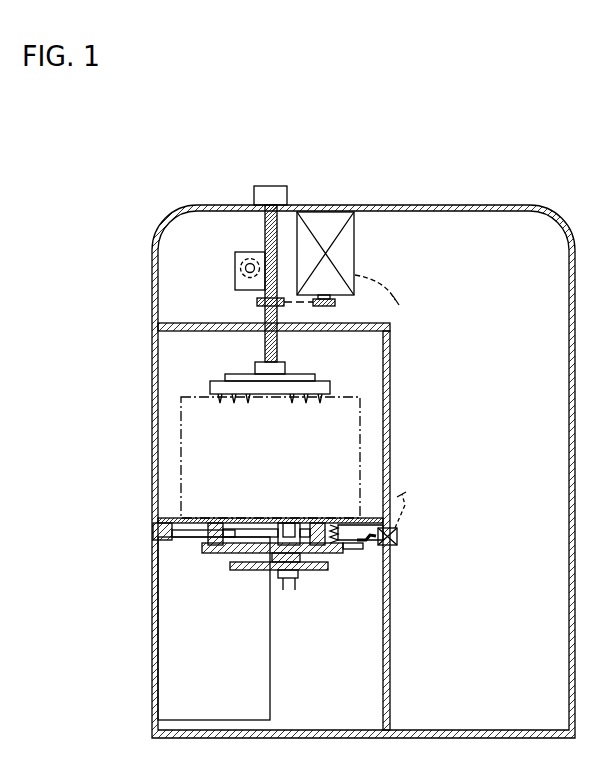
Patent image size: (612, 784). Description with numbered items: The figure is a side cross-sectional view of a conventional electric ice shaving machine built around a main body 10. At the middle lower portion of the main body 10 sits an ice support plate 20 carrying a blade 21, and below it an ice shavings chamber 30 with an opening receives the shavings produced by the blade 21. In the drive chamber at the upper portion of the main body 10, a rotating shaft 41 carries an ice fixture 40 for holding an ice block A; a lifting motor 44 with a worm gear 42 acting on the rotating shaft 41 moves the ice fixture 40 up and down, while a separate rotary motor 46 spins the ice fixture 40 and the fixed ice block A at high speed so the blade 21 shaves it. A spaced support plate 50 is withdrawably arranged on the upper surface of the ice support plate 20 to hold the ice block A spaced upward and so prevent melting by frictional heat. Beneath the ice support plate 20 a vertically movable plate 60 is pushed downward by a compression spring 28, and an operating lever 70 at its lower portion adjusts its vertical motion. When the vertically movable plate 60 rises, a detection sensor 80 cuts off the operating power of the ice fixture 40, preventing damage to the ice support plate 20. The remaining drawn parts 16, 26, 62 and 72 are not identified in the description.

The main body 10 is at (158, 163).
The chamber 16 is at (153, 412).
The rotating shaft 41 is at (278, 343).
The rotary motor 46 is at (345, 247).
The lifting motor 44 is at (238, 286).
The worm gear 42 is at (246, 272).
The ice fixture 40 is at (310, 388).
The ice block A is at (181, 446).
The ice support plate 20 is at (157, 522).
The blade 21 is at (197, 518).
The spaced support plate 50 is at (215, 523).
The compression spring 28 is at (337, 523).
The hub 62 is at (300, 578).
The vertically movable plate 60 is at (215, 548).
The lower plate 72 is at (255, 565).
The operating lever 70 is at (330, 567).
The shaft 26 is at (285, 590).
The detection sensor 80 is at (397, 545).
The ice shavings chamber 30 is at (207, 632).